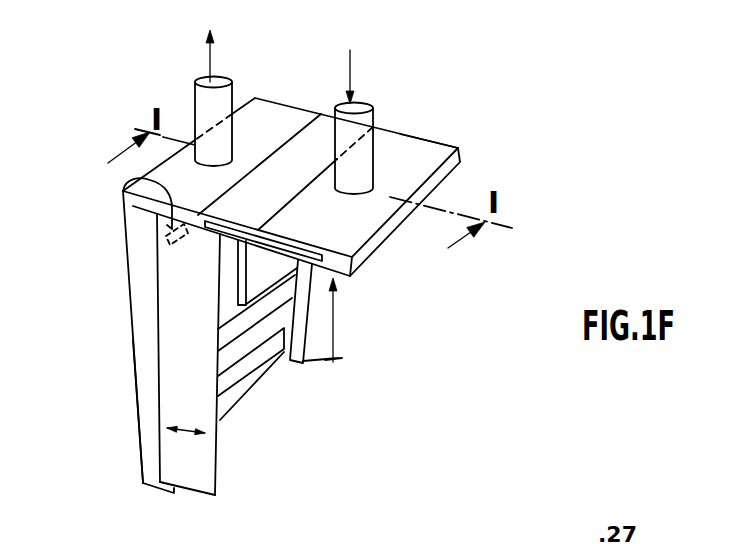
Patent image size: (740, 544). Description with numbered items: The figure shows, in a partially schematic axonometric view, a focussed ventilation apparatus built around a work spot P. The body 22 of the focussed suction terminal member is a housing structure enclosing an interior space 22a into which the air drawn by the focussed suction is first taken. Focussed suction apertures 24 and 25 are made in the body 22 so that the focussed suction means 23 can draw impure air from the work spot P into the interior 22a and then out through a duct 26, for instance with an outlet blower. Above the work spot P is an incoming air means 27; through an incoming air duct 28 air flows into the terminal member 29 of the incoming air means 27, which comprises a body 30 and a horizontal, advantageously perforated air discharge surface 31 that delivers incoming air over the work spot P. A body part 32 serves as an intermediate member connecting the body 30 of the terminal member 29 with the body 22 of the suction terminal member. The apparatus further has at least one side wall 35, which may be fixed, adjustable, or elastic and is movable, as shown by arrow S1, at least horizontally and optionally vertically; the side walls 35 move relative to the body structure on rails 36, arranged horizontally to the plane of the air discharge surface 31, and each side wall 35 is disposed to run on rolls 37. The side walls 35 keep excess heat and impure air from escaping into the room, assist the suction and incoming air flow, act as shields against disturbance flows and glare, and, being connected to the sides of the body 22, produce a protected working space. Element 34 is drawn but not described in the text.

The body of the focussed suction terminal member 22 is at (283, 96).
The interior space 22a is at (143, 373).
The focussed suction means 23 is at (127, 441).
The focussed suction aperture 24 is at (252, 388).
The focussed suction aperture 25 is at (123, 189).
The duct 26 is at (228, 103).
The incoming air means 27 is at (437, 130).
The incoming air duct 28 is at (362, 128).
The terminal member of the incoming air means 29 is at (409, 221).
The body of the terminal member 30 is at (376, 247).
The horizontal air discharge surface 31 is at (336, 310).
The body part 32 is at (347, 62).
The tongue 34 is at (237, 290).
The side wall 35 is at (200, 477).
The rails 36 is at (126, 226).
The rolls 37 is at (220, 238).
The arrow S1 is at (190, 432).
The work spot P is at (265, 373).